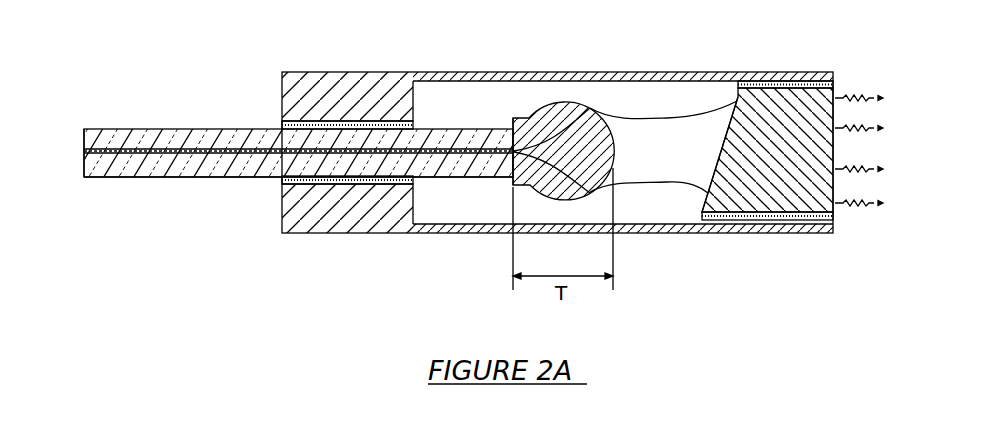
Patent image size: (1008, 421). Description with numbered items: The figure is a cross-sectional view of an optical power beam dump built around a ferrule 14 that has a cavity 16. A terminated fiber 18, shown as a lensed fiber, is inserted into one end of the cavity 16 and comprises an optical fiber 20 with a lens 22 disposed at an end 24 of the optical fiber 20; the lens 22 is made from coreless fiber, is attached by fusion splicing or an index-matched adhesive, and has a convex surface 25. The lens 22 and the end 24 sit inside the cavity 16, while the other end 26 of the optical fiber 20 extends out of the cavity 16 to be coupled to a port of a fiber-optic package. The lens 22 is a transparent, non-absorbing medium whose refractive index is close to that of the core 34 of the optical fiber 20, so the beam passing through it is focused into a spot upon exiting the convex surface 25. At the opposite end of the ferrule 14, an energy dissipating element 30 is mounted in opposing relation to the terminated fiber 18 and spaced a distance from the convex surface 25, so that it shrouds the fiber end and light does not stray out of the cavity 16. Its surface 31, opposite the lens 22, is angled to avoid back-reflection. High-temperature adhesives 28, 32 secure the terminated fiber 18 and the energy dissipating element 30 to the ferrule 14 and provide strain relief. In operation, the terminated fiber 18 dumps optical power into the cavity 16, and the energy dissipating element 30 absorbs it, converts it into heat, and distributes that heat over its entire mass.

The ferrule 14 is at (377, 72).
The cavity 16 is at (458, 207).
The terminated fiber 18 is at (267, 175).
The optical fiber 20 is at (183, 133).
The lens 22 is at (547, 107).
The end of the optical fiber 24 is at (507, 127).
The convex surface 25 is at (612, 132).
The other end of the optical fiber 26 is at (83, 163).
The high-temperature adhesive 28 is at (283, 118).
The energy dissipating element 30 is at (752, 195).
The surface of the energy dissipating element 31 is at (735, 97).
The high-temperature adhesive 32 is at (772, 83).
The core 34 is at (193, 152).